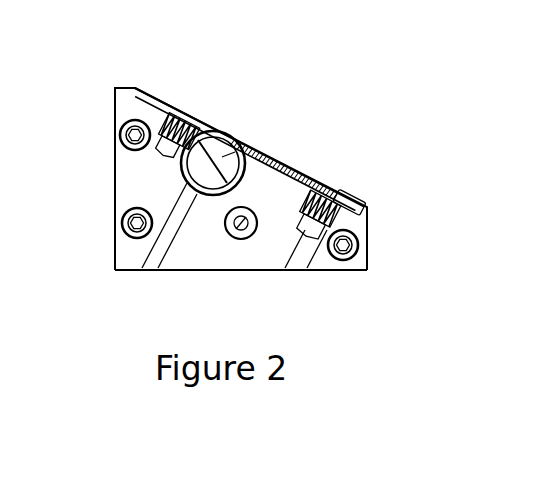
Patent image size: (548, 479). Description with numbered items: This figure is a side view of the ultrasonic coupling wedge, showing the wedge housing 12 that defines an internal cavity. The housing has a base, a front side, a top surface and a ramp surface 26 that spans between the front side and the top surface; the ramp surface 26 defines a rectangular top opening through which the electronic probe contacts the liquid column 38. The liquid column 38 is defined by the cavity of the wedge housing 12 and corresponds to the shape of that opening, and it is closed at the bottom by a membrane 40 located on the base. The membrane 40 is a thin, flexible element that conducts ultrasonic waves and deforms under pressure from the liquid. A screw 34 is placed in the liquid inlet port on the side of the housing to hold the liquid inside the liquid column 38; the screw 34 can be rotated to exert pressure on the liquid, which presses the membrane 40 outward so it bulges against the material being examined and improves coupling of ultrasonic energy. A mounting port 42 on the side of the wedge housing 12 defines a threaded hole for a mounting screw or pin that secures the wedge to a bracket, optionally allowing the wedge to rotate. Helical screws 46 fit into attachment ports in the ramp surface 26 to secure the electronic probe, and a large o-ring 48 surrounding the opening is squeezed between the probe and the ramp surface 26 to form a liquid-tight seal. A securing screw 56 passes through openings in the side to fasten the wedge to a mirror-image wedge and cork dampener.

The wedge housing 12 is at (137, 106).
The ramp surface 26 is at (168, 100).
The screw 34 is at (232, 152).
The liquid column 38 is at (210, 273).
The membrane 40 is at (250, 272).
The mounting port 42 is at (243, 220).
The helical screws 46 is at (335, 225).
The large o-ring 48 is at (325, 185).
The securing screw 56 is at (122, 122).